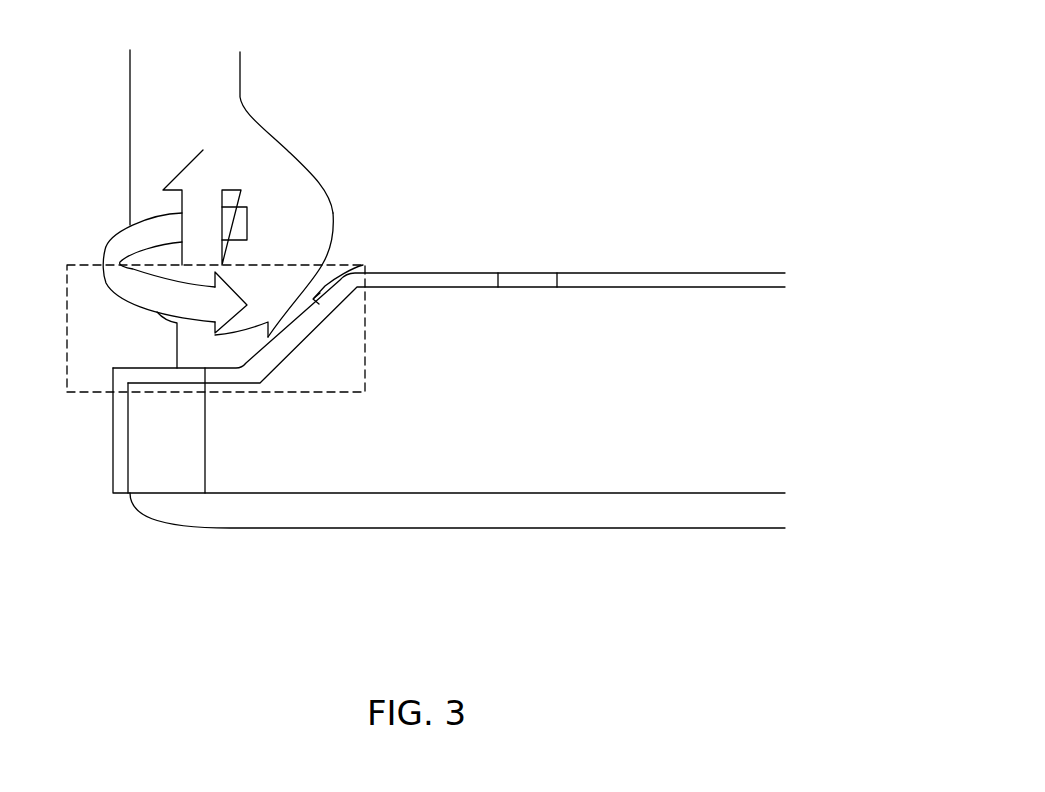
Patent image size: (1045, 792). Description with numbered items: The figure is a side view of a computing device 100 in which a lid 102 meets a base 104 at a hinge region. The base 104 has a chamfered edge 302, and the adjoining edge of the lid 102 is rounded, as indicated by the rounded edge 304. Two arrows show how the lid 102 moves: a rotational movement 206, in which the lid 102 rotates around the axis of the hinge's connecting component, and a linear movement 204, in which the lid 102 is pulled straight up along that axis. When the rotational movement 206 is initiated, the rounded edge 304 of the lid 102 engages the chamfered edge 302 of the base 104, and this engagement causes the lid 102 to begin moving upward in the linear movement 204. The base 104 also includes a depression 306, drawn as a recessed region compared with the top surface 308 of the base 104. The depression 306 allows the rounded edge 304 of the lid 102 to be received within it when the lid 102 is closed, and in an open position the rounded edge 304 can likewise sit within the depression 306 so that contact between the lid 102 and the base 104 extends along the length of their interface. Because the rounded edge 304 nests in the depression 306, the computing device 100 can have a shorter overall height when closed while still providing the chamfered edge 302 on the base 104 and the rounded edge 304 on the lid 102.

The computing device 100 is at (438, 682).
The lid 102 is at (208, 77).
The base 104 is at (690, 470).
The linear movement 204 is at (197, 180).
The rotational movement 206 is at (133, 237).
The chamfered edge 302 is at (363, 265).
The rounded edge 304 is at (330, 202).
The depression 306 is at (85, 262).
The top surface 308 is at (623, 272).